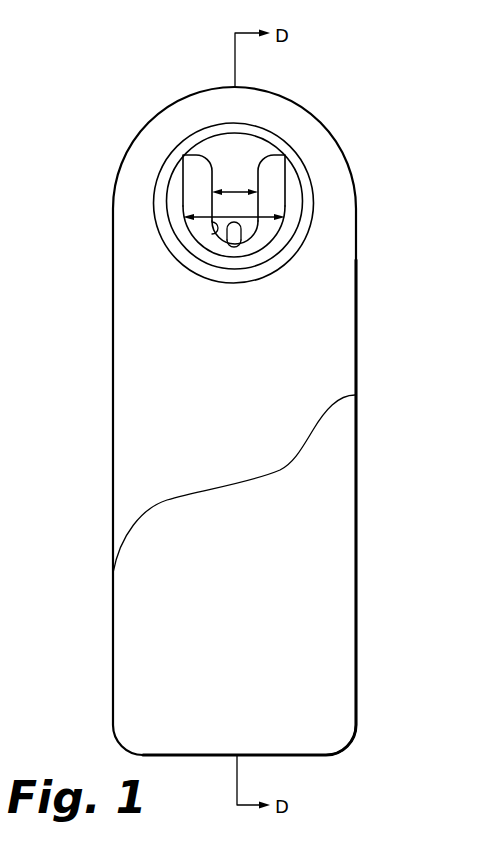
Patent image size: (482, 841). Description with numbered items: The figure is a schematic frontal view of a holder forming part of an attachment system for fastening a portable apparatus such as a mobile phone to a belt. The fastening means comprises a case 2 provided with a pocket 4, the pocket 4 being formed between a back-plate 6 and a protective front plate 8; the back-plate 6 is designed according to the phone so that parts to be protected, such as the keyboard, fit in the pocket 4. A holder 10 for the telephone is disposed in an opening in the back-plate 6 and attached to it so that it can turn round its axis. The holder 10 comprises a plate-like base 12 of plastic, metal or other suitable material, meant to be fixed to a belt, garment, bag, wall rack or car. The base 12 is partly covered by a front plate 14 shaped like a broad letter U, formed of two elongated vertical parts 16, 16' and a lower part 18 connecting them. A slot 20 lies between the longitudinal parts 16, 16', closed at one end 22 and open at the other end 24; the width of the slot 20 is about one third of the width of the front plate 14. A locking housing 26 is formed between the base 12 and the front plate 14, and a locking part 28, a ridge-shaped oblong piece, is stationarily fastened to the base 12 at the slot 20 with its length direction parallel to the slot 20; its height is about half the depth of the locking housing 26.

The case 2 is at (436, 311).
The pocket 4 is at (148, 491).
The back-plate 6 is at (250, 376).
The protective front plate 8 is at (246, 616).
The holder 10 is at (342, 204).
The plate-like base 12 is at (257, 138).
The front plate 14 is at (270, 248).
The elongated part 16 is at (143, 188).
The elongated part 16' is at (351, 182).
The lower part 18 is at (233, 263).
The slot 20 is at (212, 235).
The closed end 22 is at (243, 228).
The open end 24 is at (243, 165).
The locking housing 26 is at (217, 166).
The locking part 28 is at (241, 244).